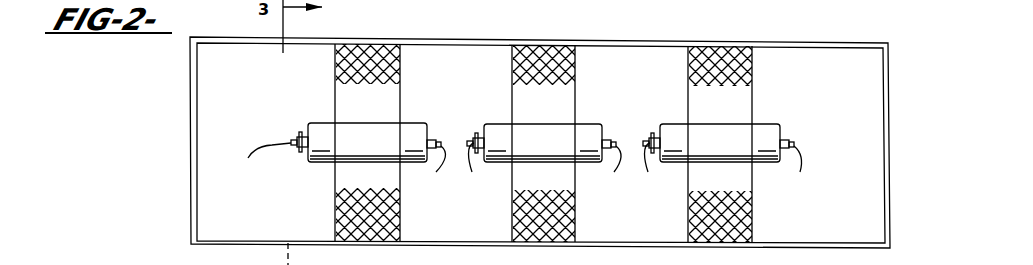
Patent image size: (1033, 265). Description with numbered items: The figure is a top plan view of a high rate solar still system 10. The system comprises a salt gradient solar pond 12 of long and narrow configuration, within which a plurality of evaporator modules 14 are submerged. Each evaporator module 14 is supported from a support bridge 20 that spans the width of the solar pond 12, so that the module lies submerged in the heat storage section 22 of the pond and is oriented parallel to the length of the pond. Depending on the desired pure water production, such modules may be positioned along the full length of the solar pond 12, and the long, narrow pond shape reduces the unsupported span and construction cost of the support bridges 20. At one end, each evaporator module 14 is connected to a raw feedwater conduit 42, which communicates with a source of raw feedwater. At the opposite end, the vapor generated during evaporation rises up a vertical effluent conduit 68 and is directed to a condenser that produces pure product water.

The solar still system 10 is at (586, 260).
The salt gradient solar pond 12 is at (885, 120).
The evaporator module 14 is at (415, 140).
The support bridge 20 is at (396, 60).
The heat storage section 22 is at (640, 226).
The raw feedwater conduit 42 is at (448, 164).
The vertical effluent conduit 68 is at (616, 168).